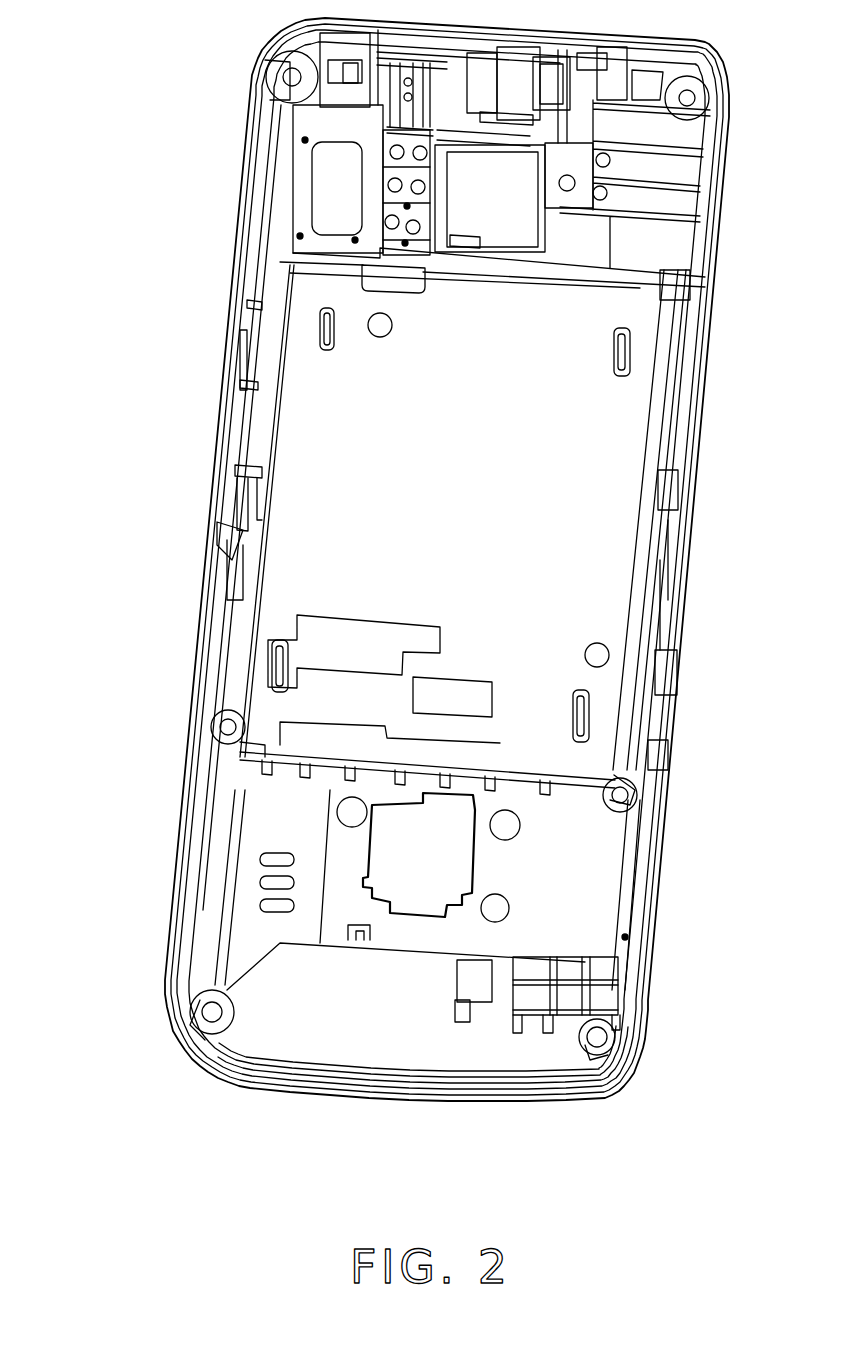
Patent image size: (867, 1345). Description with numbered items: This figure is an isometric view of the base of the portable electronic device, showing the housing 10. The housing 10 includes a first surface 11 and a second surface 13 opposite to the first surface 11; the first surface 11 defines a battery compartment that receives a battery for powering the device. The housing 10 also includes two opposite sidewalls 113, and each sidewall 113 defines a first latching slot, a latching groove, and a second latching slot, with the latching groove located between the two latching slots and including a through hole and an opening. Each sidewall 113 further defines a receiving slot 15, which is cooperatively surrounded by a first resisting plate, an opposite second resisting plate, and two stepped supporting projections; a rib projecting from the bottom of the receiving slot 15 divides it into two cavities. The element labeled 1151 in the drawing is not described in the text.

The housing 10 is at (405, 594).
The first surface 11 is at (517, 1105).
The second surface 13 is at (547, 1052).
The sidewall 113 is at (232, 318).
The receiving slot 15 is at (231, 482).
The engaging hook 1151 is at (213, 526).